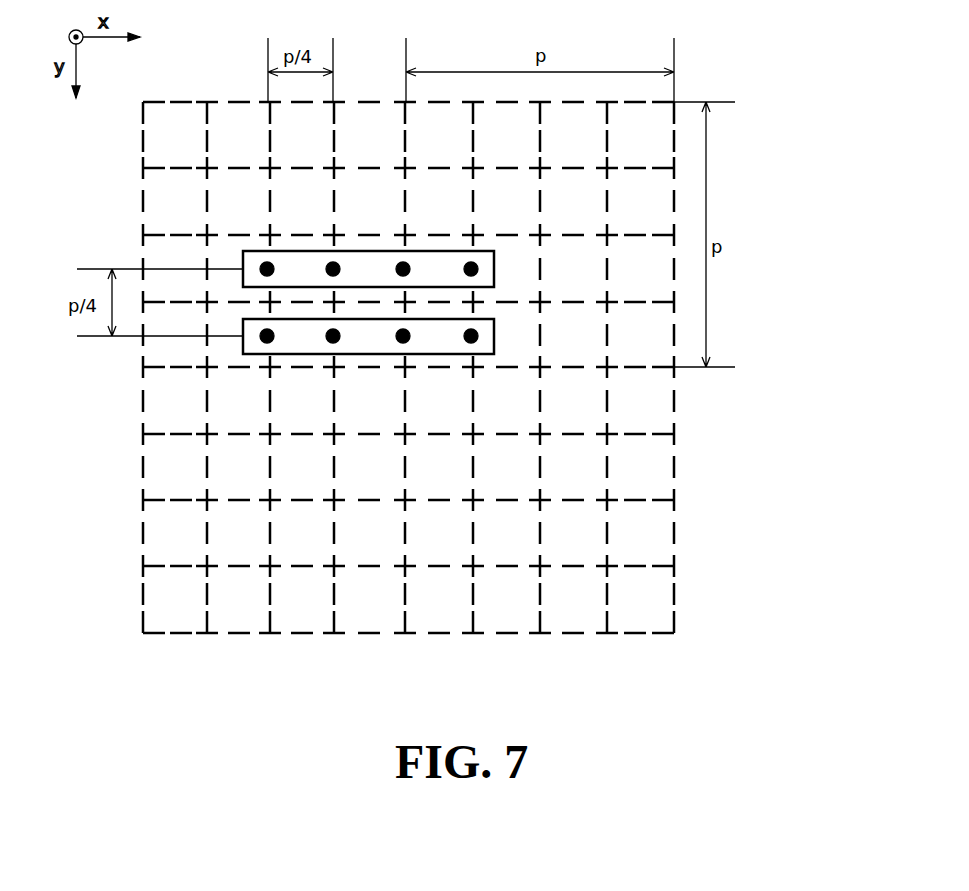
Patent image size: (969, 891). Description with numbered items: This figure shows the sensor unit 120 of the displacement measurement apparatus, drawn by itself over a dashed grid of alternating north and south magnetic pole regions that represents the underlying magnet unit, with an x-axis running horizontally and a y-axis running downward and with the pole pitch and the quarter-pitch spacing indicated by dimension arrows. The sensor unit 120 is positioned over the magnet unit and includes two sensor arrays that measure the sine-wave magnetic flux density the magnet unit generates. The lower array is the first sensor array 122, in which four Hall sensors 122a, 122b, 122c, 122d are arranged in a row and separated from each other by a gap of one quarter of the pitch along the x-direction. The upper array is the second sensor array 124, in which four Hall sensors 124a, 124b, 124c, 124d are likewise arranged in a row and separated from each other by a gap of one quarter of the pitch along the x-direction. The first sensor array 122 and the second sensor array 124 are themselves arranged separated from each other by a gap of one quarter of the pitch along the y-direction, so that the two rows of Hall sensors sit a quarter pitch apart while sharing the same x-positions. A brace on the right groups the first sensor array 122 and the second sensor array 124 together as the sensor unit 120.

The sensor unit 120 is at (117, 210).
The 1-1 sensor array 122 is at (512, 368).
The Hall sensor 122a is at (267, 344).
The Hall sensor 122b is at (333, 344).
The Hall sensor 122c is at (403, 344).
The Hall sensor 122d is at (445, 377).
The 1-2 sensor array 124 is at (510, 238).
The Hall sensor 124a is at (266, 262).
The Hall sensor 124b is at (334, 262).
The Hall sensor 124c is at (404, 262).
The Hall sensor 124d is at (514, 272).